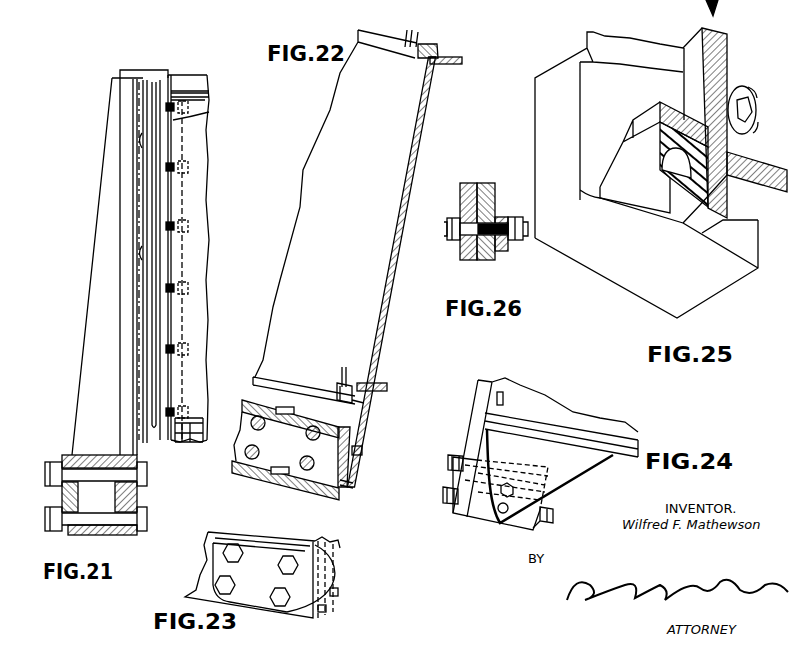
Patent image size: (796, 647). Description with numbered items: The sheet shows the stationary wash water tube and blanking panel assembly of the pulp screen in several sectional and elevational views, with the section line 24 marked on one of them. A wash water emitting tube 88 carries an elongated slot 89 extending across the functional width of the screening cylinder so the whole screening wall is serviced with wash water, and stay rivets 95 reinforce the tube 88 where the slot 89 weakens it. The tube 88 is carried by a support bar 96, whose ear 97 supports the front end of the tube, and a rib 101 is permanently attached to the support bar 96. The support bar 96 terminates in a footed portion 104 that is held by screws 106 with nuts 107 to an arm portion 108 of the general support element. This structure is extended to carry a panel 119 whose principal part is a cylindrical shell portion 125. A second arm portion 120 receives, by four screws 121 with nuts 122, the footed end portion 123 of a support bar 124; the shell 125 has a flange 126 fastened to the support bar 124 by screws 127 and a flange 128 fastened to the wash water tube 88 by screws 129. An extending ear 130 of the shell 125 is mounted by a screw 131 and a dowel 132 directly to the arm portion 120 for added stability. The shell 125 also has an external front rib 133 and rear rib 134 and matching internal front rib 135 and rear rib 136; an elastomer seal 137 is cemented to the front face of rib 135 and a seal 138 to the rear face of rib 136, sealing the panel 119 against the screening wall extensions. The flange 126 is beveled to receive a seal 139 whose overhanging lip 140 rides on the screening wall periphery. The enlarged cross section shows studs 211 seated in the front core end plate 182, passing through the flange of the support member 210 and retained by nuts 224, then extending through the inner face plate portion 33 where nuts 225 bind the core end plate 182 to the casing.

In FIG. 26, the inner face plate portion 33 is at (470, 182).
In FIG. 21, the wash water emitting tube 88 is at (172, 267).
In FIG. 21, the elongated slot 89 is at (173, 120).
In FIG. 21, the stay rivets 95 is at (152, 140).
In FIG. 21, the support bar 96 is at (120, 278).
In FIG. 21, the ear 97 is at (128, 70).
In FIG. 21, the rib 101 is at (77, 383).
In FIG. 21, the footed portion 104 is at (140, 493).
In FIG. 21, the screws 106 is at (140, 475).
In FIG. 21, the nuts 107 is at (62, 513).
In FIG. 21, the arm portion 108 is at (90, 535).
In FIG. 22, the panel 119 is at (457, 62).
In FIG. 22, the arm portion 120 is at (252, 477).
In FIG. 24, the arm portion 120 is at (472, 520).
In FIG. 23, the arm portion 120 is at (215, 532).
In FIG. 22, the screws 121 is at (307, 436).
In FIG. 24, the screws 121 is at (443, 491).
In FIG. 23, the screws 121 is at (280, 590).
In FIG. 24, the nuts 122 is at (540, 528).
In FIG. 23, the footed end portion 123 is at (255, 547).
In FIG. 25, the support bar 124 is at (638, 295).
In FIG. 24, the support bar 124 is at (478, 397).
In FIG. 23, the support bar 124 is at (345, 555).
In FIG. 21, the cylindrical shell portion 125 is at (207, 183).
In FIG. 22, the cylindrical shell portion 125 is at (422, 148).
In FIG. 25, the cylindrical shell portion 125 is at (727, 43).
In FIG. 25, the flange 126 is at (735, 285).
In FIG. 25, the screws 127 is at (747, 97).
In FIG. 24, the screws 127 is at (503, 400).
In FIG. 21, the flange 128 is at (182, 208).
In FIG. 21, the screws 129 is at (188, 165).
In FIG. 22, the extending ear 130 is at (363, 410).
In FIG. 24, the extending ear 130 is at (580, 477).
In FIG. 22, the screw 131 is at (355, 450).
In FIG. 24, the screw 131 is at (547, 508).
In FIG. 23, the screw 131 is at (338, 593).
In FIG. 22, the dowel 132 is at (348, 483).
In FIG. 24, the dowel 132 is at (502, 515).
In FIG. 23, the dowel 132 is at (327, 607).
In FIG. 22, the front rib 133 is at (445, 67).
In FIG. 25, the front rib 133 is at (763, 163).
In FIG. 22, the rear rib 134 is at (377, 388).
In FIG. 24, the rear rib 134 is at (582, 428).
In FIG. 21, the front rib 135 is at (210, 99).
In FIG. 22, the front rib 135 is at (417, 63).
In FIG. 25, the front rib 135 is at (673, 100).
In FIG. 21, the rear rib 136 is at (198, 417).
In FIG. 22, the rear rib 136 is at (353, 383).
In FIG. 21, the seal 137 is at (207, 82).
In FIG. 22, the seal 137 is at (412, 52).
In FIG. 25, the seal 137 is at (617, 167).
In FIG. 21, the seal 138 is at (190, 433).
In FIG. 22, the seal 138 is at (348, 385).
In FIG. 25, the seal 139 is at (610, 212).
In FIG. 25, the overhanging lip 140 is at (580, 153).
In FIG. 26, the front core end plate 182 is at (487, 183).
In FIG. 26, the support member 210 is at (502, 215).
In FIG. 26, the studs 211 is at (527, 237).
In FIG. 26, the nuts 224 is at (517, 250).
In FIG. 26, the nuts 225 is at (453, 240).
In FIG. 22, the section line 24 is at (402, 368).